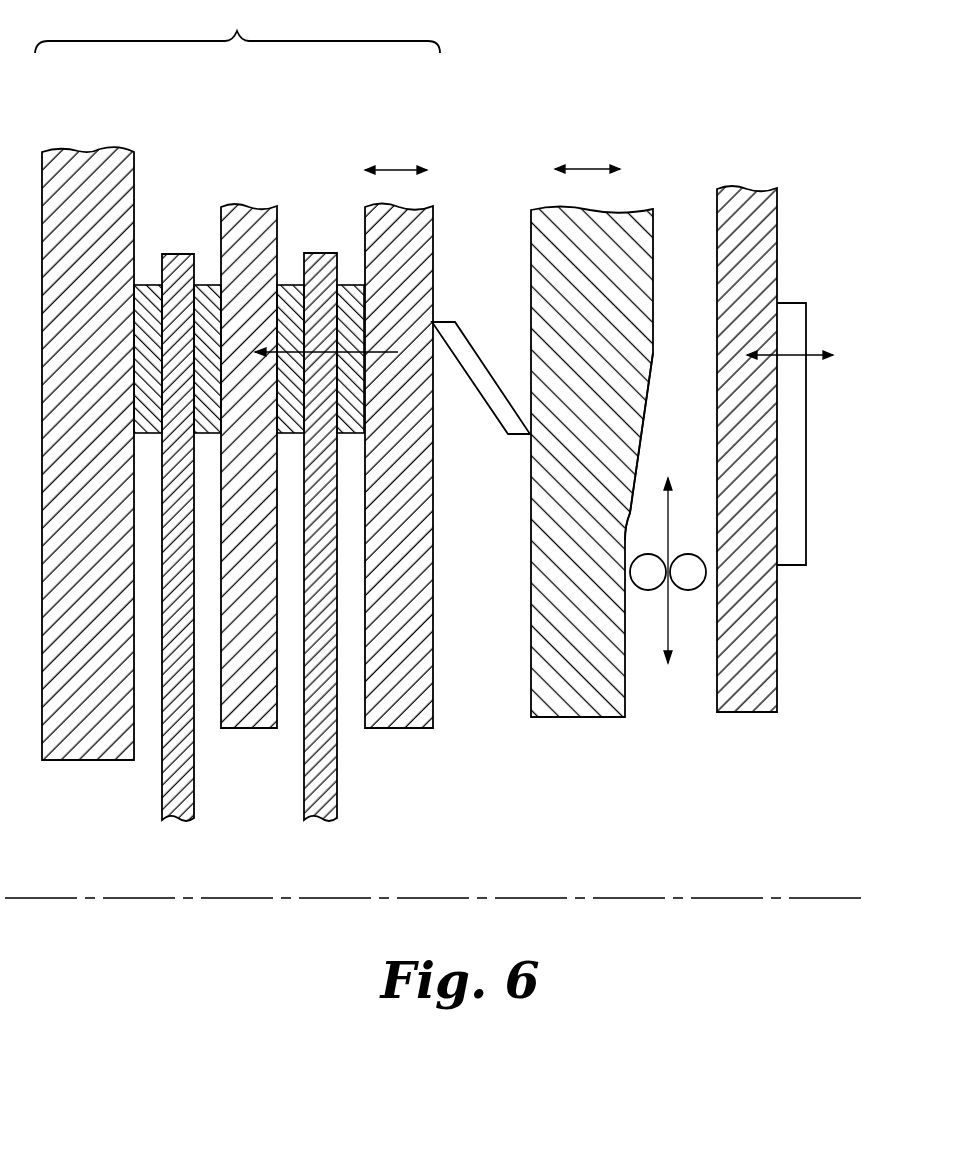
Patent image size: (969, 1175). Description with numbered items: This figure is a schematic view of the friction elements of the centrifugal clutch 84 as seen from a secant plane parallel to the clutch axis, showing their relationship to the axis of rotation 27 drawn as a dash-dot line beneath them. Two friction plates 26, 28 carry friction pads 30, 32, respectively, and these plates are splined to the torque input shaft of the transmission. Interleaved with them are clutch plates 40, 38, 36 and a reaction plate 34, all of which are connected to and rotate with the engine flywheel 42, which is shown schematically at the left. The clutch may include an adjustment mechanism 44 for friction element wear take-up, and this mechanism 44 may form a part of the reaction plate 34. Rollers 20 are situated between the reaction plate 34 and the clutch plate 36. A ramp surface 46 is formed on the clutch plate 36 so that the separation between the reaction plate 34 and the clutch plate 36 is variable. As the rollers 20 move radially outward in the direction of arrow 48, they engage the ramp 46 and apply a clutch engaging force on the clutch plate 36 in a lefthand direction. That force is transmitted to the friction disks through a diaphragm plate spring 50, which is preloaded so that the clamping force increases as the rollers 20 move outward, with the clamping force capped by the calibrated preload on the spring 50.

The centrifugal clutch 84 is at (237, 27).
The engine flywheel 42 is at (87, 158).
The clutch plate 40 is at (252, 212).
The clutch plate 38 is at (435, 222).
The friction plate 26 is at (180, 253).
The friction plate 28 is at (327, 252).
The friction pads 30 is at (143, 285).
The friction pads 32 is at (287, 285).
The diaphragm plate spring 50 is at (483, 353).
The clutch plate 36 is at (645, 212).
The ramp surface 46 is at (643, 437).
The arrow 48 is at (672, 508).
The rollers 20 is at (688, 553).
The reaction plate 34 is at (748, 190).
The adjustment mechanism 44 is at (806, 328).
The axis of rotation 27 is at (598, 898).